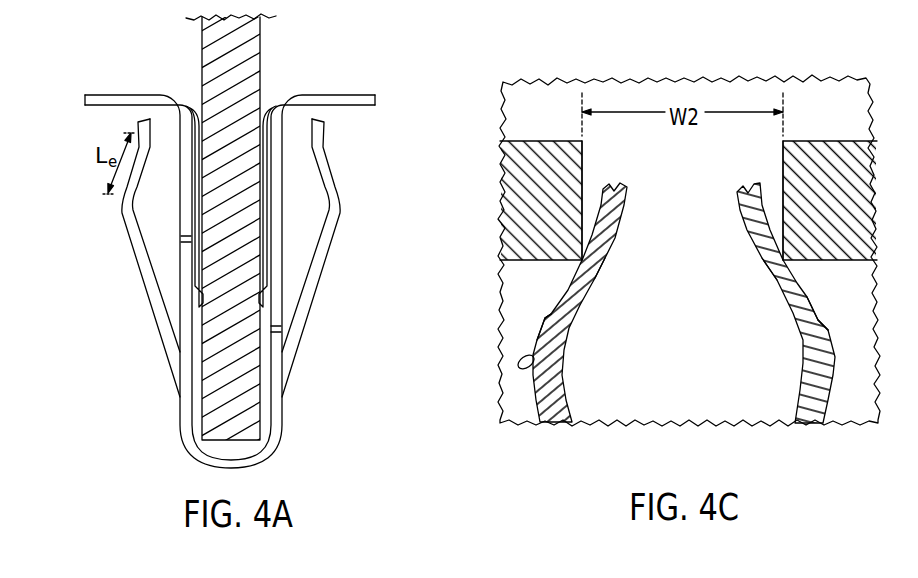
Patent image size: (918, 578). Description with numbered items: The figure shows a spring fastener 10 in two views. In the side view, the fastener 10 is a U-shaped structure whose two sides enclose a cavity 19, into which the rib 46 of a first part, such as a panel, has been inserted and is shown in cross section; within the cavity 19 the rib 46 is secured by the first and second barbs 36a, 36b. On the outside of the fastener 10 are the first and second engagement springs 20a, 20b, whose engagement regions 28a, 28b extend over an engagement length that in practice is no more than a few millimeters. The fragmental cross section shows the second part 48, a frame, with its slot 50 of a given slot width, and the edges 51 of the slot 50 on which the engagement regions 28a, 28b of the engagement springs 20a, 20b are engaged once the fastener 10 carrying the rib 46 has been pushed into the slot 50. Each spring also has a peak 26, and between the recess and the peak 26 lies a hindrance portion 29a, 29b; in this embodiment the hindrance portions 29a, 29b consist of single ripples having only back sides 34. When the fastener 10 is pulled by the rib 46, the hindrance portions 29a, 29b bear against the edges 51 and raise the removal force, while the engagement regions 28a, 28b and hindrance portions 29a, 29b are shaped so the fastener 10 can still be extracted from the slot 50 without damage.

In FIG. 4A, the spring fastener 10 is at (256, 263).
In FIG. 4A, the cavity 19 is at (265, 122).
In FIG. 4A, the rib 46 is at (222, 57).
In FIG. 4A, the first engagement region 28a is at (146, 160).
In FIG. 4C, the first engagement region 28a is at (601, 255).
In FIG. 4C, the second engagement region 28b is at (767, 255).
In FIG. 4A, the first barb 36a is at (198, 297).
In FIG. 4A, the second barb 36b is at (268, 300).
In FIG. 4C, the second part 48 is at (822, 150).
In FIG. 4C, the slot 50 is at (677, 222).
In FIG. 4C, the edges 51 is at (593, 278).
In FIG. 4C, the back side 34 is at (545, 318).
In FIG. 4C, the first hindrance portion 29a is at (553, 335).
In FIG. 4C, the second hindrance portion 29b is at (800, 322).
In FIG. 4C, the peak 26 is at (536, 369).
In FIG. 4C, the first engagement spring 20a is at (557, 400).
In FIG. 4C, the second engagement spring 20b is at (810, 393).